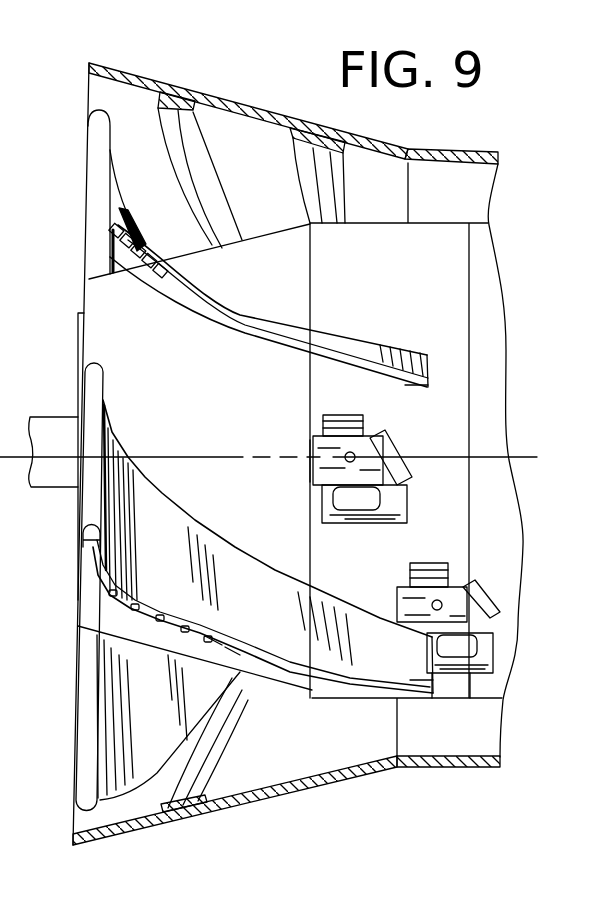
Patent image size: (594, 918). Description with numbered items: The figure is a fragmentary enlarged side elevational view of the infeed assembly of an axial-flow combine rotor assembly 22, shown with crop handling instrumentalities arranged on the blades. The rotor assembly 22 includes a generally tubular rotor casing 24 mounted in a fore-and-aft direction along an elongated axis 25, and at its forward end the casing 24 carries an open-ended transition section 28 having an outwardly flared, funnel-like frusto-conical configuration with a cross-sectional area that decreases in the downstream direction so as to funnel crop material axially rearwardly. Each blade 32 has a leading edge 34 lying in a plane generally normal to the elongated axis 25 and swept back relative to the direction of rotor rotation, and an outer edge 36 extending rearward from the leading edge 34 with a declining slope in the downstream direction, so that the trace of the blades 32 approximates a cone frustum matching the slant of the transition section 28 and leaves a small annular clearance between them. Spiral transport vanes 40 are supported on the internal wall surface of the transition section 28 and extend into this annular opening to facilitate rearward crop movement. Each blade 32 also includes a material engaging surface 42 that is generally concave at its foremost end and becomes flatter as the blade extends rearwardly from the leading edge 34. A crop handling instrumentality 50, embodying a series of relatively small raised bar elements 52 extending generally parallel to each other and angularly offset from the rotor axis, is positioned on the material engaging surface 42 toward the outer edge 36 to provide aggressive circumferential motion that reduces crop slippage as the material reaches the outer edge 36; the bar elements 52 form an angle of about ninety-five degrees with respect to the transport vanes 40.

The rotor assembly 22 is at (494, 322).
The rotor casing 24 is at (450, 150).
The elongated axis 25 is at (202, 455).
The transition section 28 is at (276, 113).
The blade 32 is at (253, 281).
The leading edge 34 is at (87, 173).
The outer edge 36 is at (405, 390).
The spiral transport vanes 40 is at (186, 96).
The material engaging surface 42 is at (180, 306).
The crop handling instrumentality 50 is at (133, 275).
The bar elements 52 is at (158, 258).